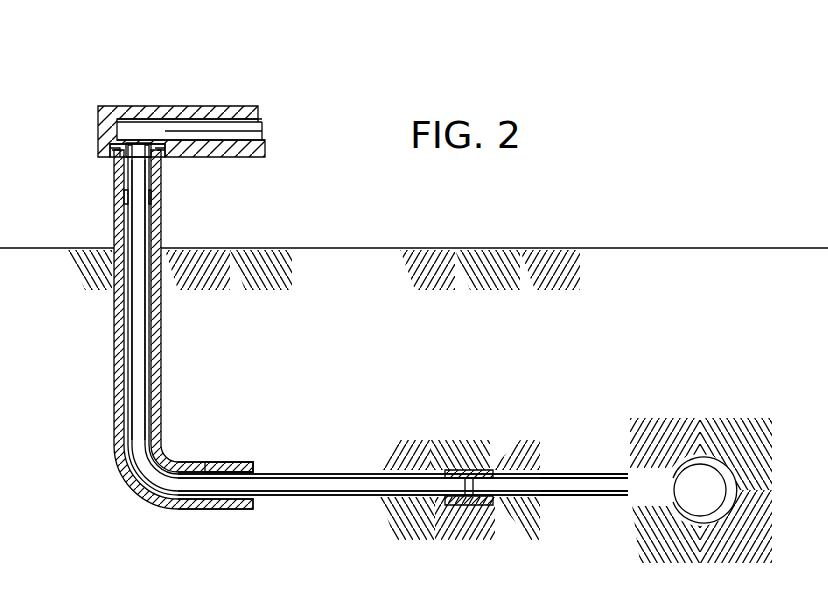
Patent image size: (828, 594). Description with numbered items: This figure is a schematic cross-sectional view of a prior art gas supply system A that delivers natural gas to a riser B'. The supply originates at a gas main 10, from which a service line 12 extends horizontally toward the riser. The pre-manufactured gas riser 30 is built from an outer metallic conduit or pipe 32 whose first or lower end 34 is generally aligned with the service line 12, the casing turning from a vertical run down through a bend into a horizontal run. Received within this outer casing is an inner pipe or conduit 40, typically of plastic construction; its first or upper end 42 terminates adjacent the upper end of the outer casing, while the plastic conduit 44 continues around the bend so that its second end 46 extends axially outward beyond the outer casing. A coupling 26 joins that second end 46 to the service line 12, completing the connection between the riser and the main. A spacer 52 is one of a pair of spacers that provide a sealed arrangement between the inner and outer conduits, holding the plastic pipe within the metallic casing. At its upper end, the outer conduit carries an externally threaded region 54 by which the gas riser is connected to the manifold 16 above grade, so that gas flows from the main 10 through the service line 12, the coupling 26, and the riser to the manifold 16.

The gas main 10 is at (709, 456).
The service line 12 is at (566, 503).
The manifold 16 is at (207, 103).
The coupling 26 is at (481, 470).
The gas riser 30 is at (110, 337).
The outer metallic conduit 32 is at (161, 172).
The lower end 34 is at (196, 511).
The inner pipe 40 is at (148, 388).
The upper end 42 is at (139, 144).
The plastic conduit 44 is at (362, 498).
The second end 46 is at (450, 468).
The spacer 52 is at (160, 199).
The externally threaded region 54 is at (107, 151).
The gas supply system A is at (748, 419).
The riser B' is at (68, 459).